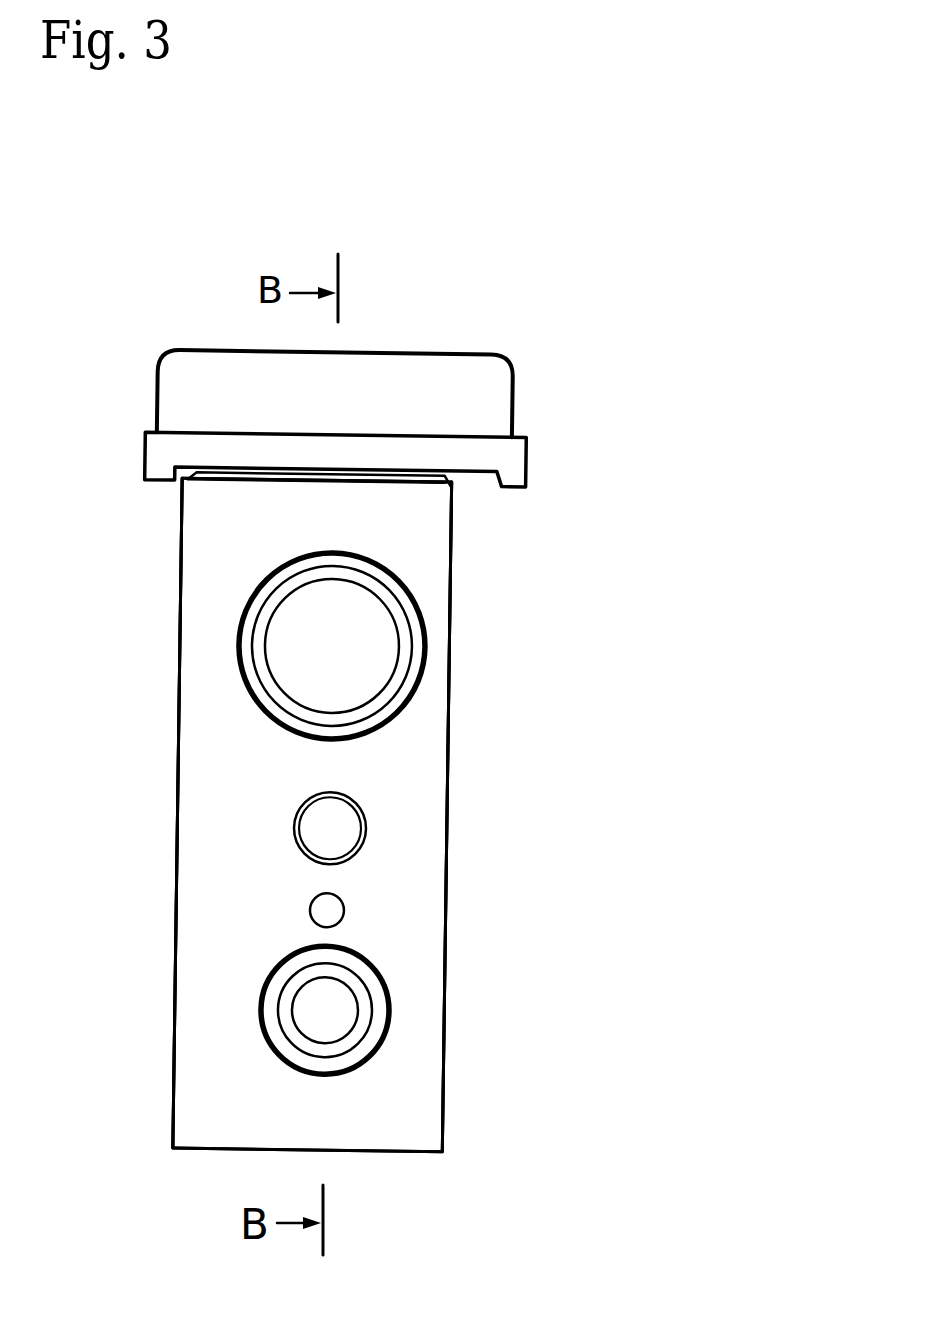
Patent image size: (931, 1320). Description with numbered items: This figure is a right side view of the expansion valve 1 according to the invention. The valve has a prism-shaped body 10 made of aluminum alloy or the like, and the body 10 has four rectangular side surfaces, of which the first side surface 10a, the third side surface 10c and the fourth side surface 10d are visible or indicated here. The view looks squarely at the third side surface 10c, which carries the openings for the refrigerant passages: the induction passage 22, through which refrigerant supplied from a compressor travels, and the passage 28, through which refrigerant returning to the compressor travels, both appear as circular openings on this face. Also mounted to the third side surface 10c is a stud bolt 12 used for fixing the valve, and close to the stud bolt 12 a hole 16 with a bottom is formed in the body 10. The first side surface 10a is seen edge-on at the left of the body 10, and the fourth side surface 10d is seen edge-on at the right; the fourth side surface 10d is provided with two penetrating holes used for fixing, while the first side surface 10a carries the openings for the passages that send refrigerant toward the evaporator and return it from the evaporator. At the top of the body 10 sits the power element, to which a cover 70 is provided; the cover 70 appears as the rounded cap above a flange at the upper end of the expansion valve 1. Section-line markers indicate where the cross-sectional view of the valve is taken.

The expansion valve 1 is at (682, 235).
The body 10 is at (420, 1101).
The first side surface 10a is at (174, 975).
The third side surface 10c is at (420, 922).
The fourth side surface 10d is at (447, 790).
The stud bolt 12 is at (317, 830).
The hole with a bottom 16 is at (323, 908).
The induction passage 22 is at (348, 1013).
The passage 28 is at (387, 650).
The cover 70 is at (495, 411).